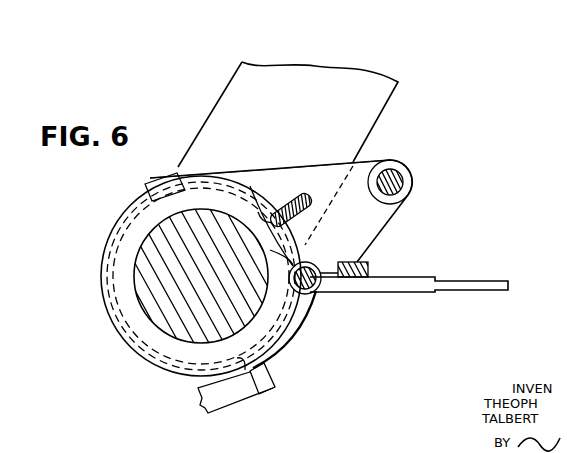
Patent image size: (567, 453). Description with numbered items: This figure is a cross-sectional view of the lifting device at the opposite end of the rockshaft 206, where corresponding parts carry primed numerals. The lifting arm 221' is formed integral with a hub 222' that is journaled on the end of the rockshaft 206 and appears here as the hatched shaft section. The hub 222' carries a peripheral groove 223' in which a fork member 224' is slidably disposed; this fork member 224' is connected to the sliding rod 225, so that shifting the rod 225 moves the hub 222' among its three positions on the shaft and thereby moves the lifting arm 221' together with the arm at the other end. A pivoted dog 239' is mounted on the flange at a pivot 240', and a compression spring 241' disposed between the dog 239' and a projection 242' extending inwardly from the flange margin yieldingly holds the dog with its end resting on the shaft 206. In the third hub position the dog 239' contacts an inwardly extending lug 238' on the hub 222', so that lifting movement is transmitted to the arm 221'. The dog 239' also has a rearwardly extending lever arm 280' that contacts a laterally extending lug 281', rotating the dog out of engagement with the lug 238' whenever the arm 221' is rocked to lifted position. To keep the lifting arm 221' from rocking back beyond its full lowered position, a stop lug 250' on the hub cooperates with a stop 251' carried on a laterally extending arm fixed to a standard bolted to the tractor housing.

The lifting arm 221' is at (288, 141).
The rockshaft 206 is at (177, 257).
The groove 223' is at (182, 276).
The hub 222' is at (193, 282).
The pivoted dog 239' is at (270, 215).
The fork member 224' is at (296, 216).
The compression spring 241' is at (270, 179).
The sliding rod 225 is at (400, 176).
The projection 242' is at (302, 199).
The lug 238' is at (311, 260).
The lug 281' is at (374, 254).
The lever arm 280' is at (409, 269).
The pivot 240' is at (294, 326).
The stop lug 250' is at (286, 380).
The stop 251' is at (235, 406).